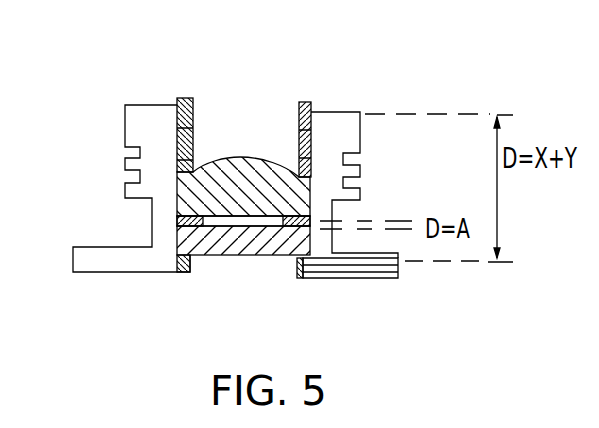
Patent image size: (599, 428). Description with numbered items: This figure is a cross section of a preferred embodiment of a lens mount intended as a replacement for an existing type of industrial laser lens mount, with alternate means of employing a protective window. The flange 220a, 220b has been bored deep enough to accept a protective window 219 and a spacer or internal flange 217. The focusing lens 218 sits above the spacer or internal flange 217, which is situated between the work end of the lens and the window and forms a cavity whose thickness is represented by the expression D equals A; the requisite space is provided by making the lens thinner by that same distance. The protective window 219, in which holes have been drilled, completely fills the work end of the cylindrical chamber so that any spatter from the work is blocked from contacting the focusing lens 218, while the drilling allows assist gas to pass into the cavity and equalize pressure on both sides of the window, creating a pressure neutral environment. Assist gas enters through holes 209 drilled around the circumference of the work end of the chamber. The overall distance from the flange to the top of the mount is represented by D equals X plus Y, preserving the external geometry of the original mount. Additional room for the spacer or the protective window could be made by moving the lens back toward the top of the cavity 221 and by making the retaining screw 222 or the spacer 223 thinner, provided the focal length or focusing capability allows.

The holes 209 is at (398, 270).
The spacer or internal flange 217 is at (283, 220).
The focusing lens 218 is at (218, 161).
The protective window 219 is at (242, 257).
The flange 220a is at (177, 257).
The flange 220b is at (300, 280).
The cavity 221 is at (248, 98).
The retaining screw 222 is at (311, 102).
The spacer 223 is at (298, 149).